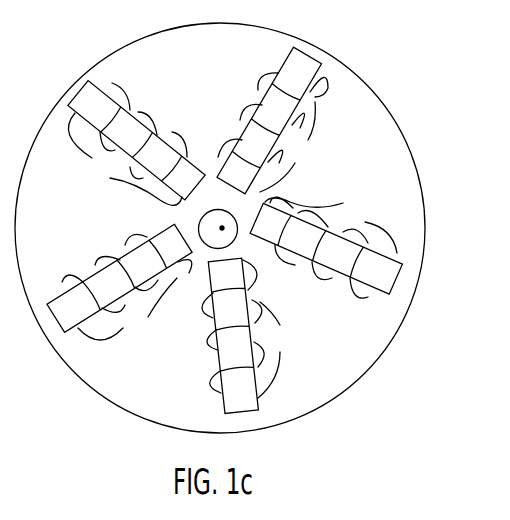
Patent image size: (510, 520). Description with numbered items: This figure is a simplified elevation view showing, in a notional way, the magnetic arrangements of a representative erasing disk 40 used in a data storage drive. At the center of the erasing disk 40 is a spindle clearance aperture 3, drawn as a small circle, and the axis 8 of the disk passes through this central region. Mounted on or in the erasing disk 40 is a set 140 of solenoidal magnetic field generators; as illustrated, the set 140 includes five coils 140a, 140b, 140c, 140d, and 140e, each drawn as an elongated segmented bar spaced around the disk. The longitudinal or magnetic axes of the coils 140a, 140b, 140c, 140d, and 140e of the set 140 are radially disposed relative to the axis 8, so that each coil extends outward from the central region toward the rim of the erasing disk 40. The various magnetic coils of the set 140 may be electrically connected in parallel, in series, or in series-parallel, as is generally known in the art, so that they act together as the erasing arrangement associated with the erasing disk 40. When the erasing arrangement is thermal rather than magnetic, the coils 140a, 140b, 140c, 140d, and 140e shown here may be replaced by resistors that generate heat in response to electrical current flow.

The set of solenoidal magnetic coils 140 is at (421, 80).
The erasing disk 40 is at (398, 168).
The spindle clearance aperture 3 is at (207, 215).
The axis 8 is at (222, 228).
The coil 140a is at (132, 110).
The coil 140b is at (260, 95).
The coil 140c is at (338, 263).
The coil 140d is at (223, 402).
The coil 140e is at (103, 280).